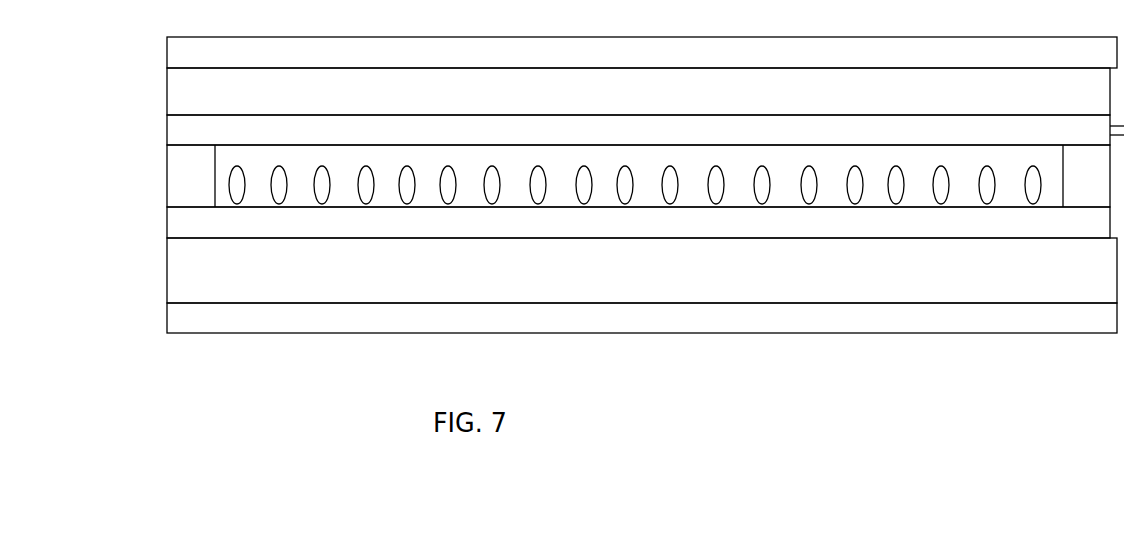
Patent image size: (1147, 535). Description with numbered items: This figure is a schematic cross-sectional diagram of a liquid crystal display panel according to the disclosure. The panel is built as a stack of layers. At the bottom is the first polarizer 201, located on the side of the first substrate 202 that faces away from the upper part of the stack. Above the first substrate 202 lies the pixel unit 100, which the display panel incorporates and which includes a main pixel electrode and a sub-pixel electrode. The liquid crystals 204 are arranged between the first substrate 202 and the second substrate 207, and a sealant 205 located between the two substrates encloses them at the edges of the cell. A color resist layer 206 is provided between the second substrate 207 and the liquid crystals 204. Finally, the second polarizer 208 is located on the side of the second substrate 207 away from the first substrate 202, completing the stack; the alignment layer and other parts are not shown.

The second polarizer 208 is at (178, 47).
The second substrate 207 is at (183, 83).
The color resist layer 206 is at (183, 127).
The sealant 205 is at (186, 167).
The liquid crystals 204 is at (235, 186).
The pixel unit 100 is at (177, 222).
The first substrate 202 is at (185, 273).
The first polarizer 201 is at (185, 319).